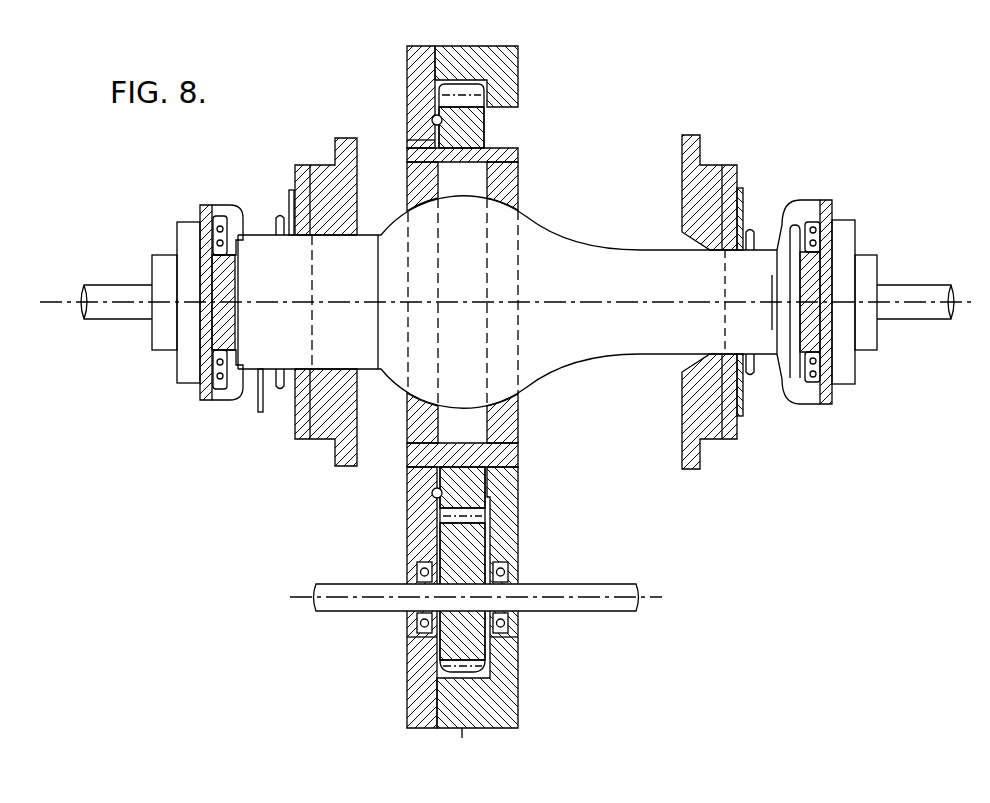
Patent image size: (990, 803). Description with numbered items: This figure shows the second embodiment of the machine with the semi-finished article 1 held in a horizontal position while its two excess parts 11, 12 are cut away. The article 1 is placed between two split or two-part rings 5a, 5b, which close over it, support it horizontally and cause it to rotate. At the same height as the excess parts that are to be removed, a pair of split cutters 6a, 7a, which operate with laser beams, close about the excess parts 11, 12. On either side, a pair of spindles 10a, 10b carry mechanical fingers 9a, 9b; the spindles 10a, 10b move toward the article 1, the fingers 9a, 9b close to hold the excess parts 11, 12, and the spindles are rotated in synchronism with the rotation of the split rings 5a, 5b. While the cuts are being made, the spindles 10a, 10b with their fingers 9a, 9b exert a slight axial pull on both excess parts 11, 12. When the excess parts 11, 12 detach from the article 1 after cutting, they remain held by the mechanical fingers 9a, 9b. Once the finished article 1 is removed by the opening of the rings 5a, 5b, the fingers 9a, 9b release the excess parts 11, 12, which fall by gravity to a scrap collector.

The article 1 is at (556, 364).
The split ring 5a is at (520, 418).
The split ring 5b is at (401, 425).
The split cutter 6a is at (706, 415).
The split cutter 7a is at (318, 435).
The mechanical fingers 9a is at (792, 388).
The mechanical fingers 9b is at (222, 394).
The spindle 10a is at (905, 320).
The spindle 10b is at (113, 321).
The excess part 11 is at (766, 378).
The excess part 12 is at (259, 413).